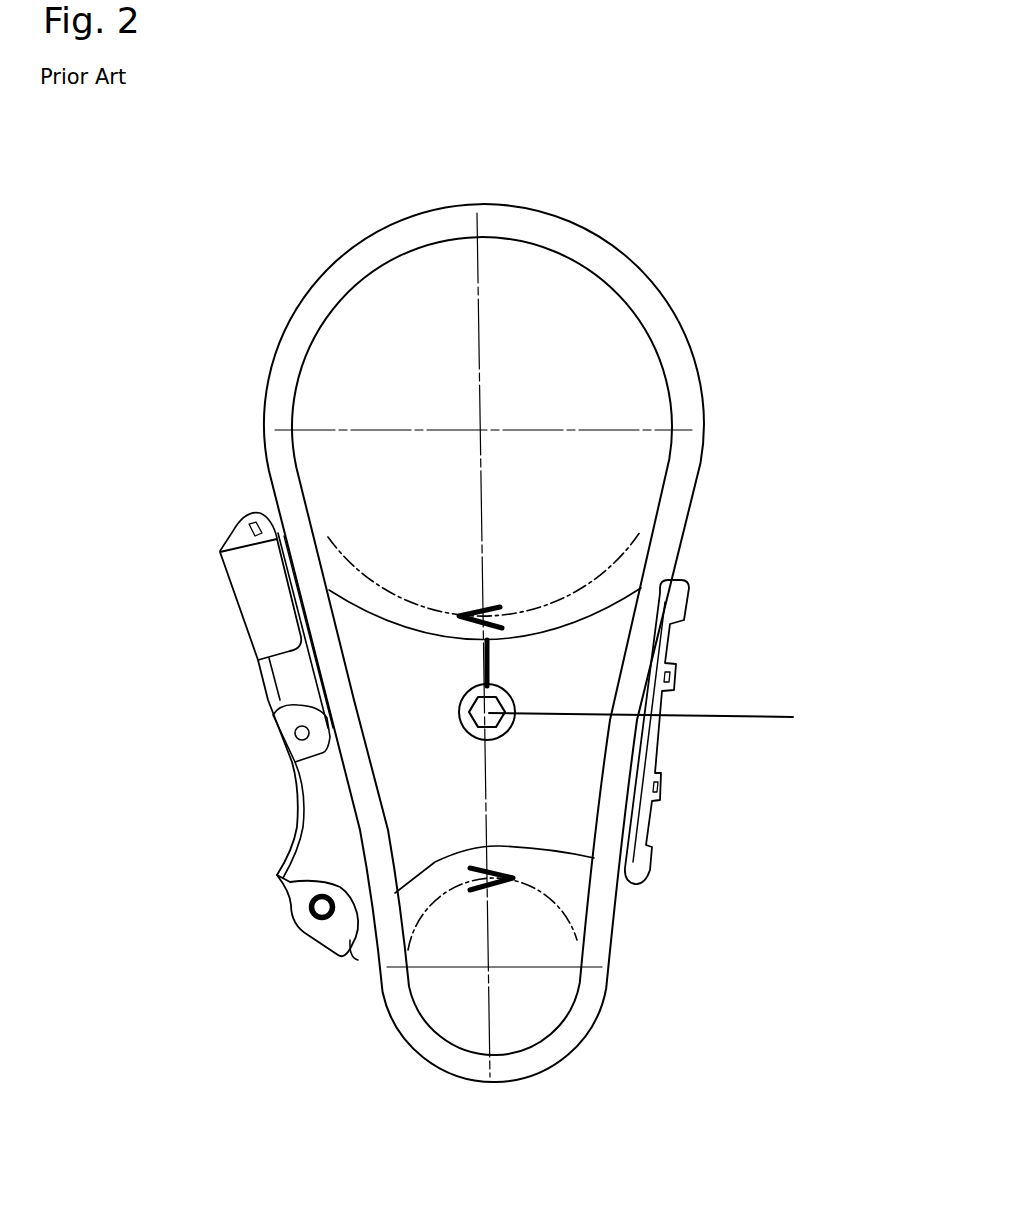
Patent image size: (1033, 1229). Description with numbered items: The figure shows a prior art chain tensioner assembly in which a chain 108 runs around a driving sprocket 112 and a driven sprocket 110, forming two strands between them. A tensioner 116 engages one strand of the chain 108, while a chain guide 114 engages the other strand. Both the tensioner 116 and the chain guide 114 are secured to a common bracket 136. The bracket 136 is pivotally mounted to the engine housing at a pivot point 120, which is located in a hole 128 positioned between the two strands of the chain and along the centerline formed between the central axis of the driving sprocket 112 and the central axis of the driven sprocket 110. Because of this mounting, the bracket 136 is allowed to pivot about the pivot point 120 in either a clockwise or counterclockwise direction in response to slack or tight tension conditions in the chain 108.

The chain 108 is at (665, 335).
The driven sprocket 110 is at (508, 280).
The driving sprocket 112 is at (540, 988).
The chain guide 114 is at (661, 742).
The tensioner 116 is at (285, 840).
The pivot point 120 is at (665, 719).
The hole 128 is at (459, 726).
The bracket 136 is at (385, 700).